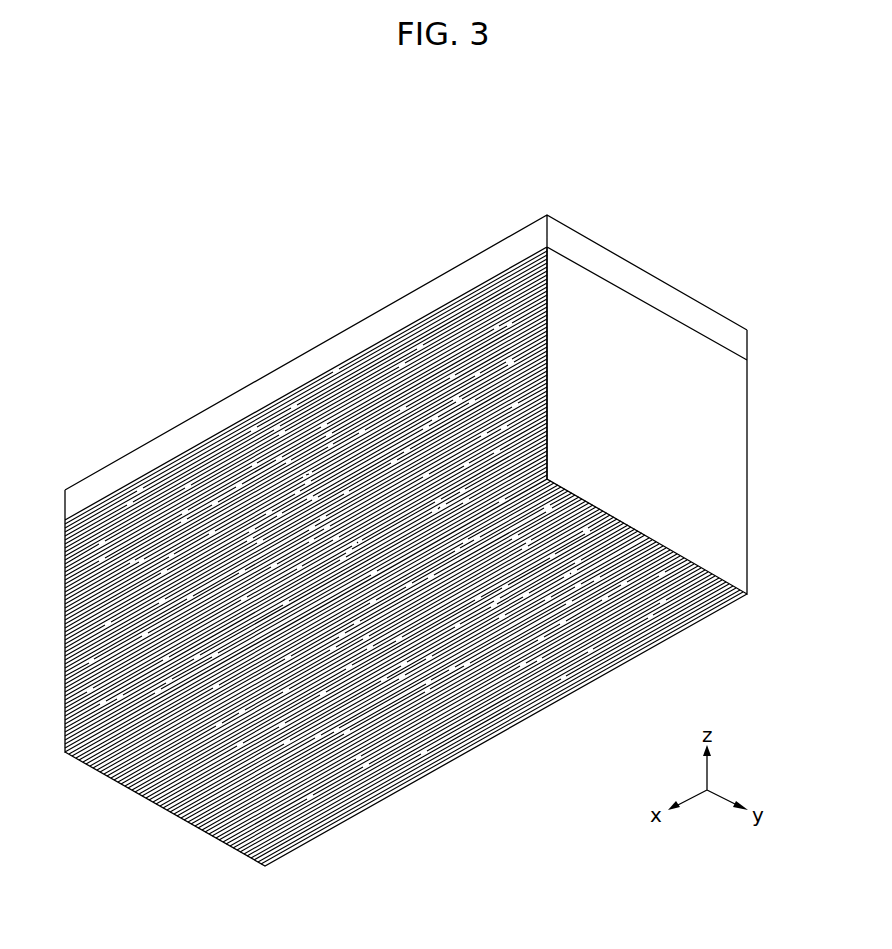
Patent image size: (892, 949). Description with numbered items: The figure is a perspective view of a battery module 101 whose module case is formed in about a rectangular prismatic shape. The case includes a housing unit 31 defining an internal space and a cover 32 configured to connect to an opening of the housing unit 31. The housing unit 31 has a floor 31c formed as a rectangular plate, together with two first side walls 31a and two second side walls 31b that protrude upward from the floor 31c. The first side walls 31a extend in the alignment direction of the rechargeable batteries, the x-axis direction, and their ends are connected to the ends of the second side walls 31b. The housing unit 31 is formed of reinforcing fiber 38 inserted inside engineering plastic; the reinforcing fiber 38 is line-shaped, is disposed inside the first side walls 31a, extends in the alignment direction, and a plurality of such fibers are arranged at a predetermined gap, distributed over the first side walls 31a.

The battery module 101 is at (365, 159).
The housing unit 31 is at (752, 489).
The first side walls 31a is at (333, 444).
The second side walls 31b is at (725, 392).
The floor 31c is at (560, 683).
The cover 32 is at (474, 272).
The reinforcing fiber 38 is at (185, 458).